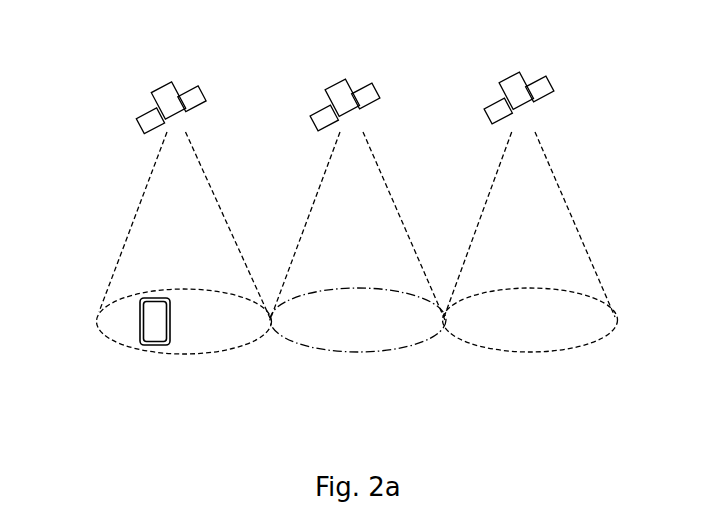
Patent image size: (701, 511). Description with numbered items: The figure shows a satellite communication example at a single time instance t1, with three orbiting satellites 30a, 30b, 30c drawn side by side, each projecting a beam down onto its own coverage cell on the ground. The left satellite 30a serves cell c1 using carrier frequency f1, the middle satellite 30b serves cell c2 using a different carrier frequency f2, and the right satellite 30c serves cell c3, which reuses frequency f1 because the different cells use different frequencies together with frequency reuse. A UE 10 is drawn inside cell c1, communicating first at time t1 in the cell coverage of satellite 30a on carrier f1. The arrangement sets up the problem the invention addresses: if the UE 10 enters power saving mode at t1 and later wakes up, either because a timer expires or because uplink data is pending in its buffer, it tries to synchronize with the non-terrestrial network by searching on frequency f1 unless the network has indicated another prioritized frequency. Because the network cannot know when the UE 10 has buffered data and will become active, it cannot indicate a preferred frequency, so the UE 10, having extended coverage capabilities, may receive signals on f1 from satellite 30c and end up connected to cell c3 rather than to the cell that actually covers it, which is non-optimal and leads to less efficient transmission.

The satellite 30a is at (168, 88).
The satellite 30b is at (343, 82).
The satellite 30c is at (513, 80).
The UE 10 is at (140, 326).
The frequency f1 is at (357, 226).
The frequency f2 is at (357, 226).
The cell c1 is at (184, 321).
The cell c2 is at (358, 320).
The cell c3 is at (530, 320).
The time instance t1 is at (84, 229).